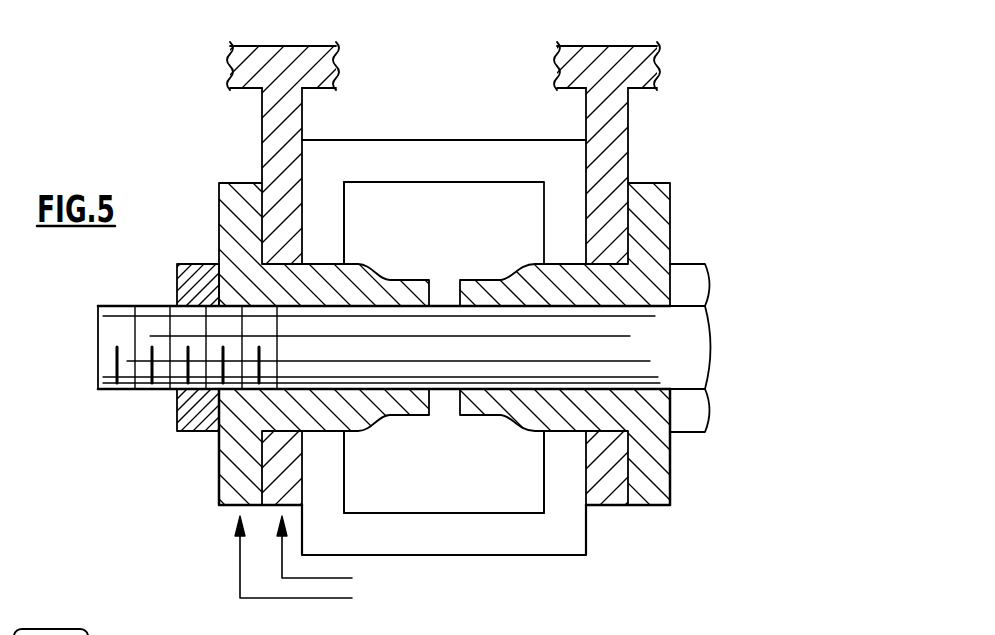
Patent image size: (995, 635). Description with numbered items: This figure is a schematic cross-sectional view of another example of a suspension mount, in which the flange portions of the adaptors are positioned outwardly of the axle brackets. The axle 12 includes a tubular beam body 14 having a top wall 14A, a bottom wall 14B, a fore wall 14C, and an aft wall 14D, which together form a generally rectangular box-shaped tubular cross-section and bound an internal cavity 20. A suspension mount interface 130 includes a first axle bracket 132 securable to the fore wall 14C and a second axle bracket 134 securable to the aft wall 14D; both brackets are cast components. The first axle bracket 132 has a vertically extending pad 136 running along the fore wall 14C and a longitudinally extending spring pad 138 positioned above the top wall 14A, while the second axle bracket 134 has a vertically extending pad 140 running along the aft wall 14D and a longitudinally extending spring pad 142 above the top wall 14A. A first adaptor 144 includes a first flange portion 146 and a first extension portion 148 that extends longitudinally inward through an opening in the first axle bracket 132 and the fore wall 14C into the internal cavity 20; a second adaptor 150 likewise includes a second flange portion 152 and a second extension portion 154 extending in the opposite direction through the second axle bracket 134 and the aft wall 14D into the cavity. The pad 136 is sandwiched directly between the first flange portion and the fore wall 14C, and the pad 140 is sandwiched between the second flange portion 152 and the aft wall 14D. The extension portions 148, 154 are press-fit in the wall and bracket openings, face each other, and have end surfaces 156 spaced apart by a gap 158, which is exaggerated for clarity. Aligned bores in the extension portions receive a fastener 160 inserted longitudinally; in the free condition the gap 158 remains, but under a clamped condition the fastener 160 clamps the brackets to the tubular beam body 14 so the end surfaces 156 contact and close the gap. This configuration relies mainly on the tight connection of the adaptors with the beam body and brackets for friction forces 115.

The suspension mount interface 130 is at (150, 110).
The longitudinally extending spring pad 142 is at (302, 52).
The second axle bracket 134 is at (272, 113).
The longitudinally extending spring pad 138 is at (628, 52).
The first axle bracket 132 is at (620, 137).
The axle 12 is at (503, 134).
The top wall 14A is at (408, 152).
The first flange portion 146 is at (664, 236).
The first adaptor 144 is at (663, 482).
The second adaptor 150 is at (215, 455).
The second flange portion 152 is at (227, 490).
The second extension portion 154 is at (407, 288).
The first extension portion 148 is at (479, 288).
The end surfaces 156 is at (440, 398).
The gap 158 is at (446, 270).
The internal cavity 20 is at (466, 512).
The aft wall 14D is at (335, 447).
The fore wall 14C is at (556, 488).
The bottom wall 14B is at (383, 520).
The tubular beam body 14 is at (546, 546).
The vertically extending pad 140 is at (297, 490).
The vertically extending pad 136 is at (610, 497).
The fastener 160 is at (696, 350).
The friction forces 115 is at (306, 580).